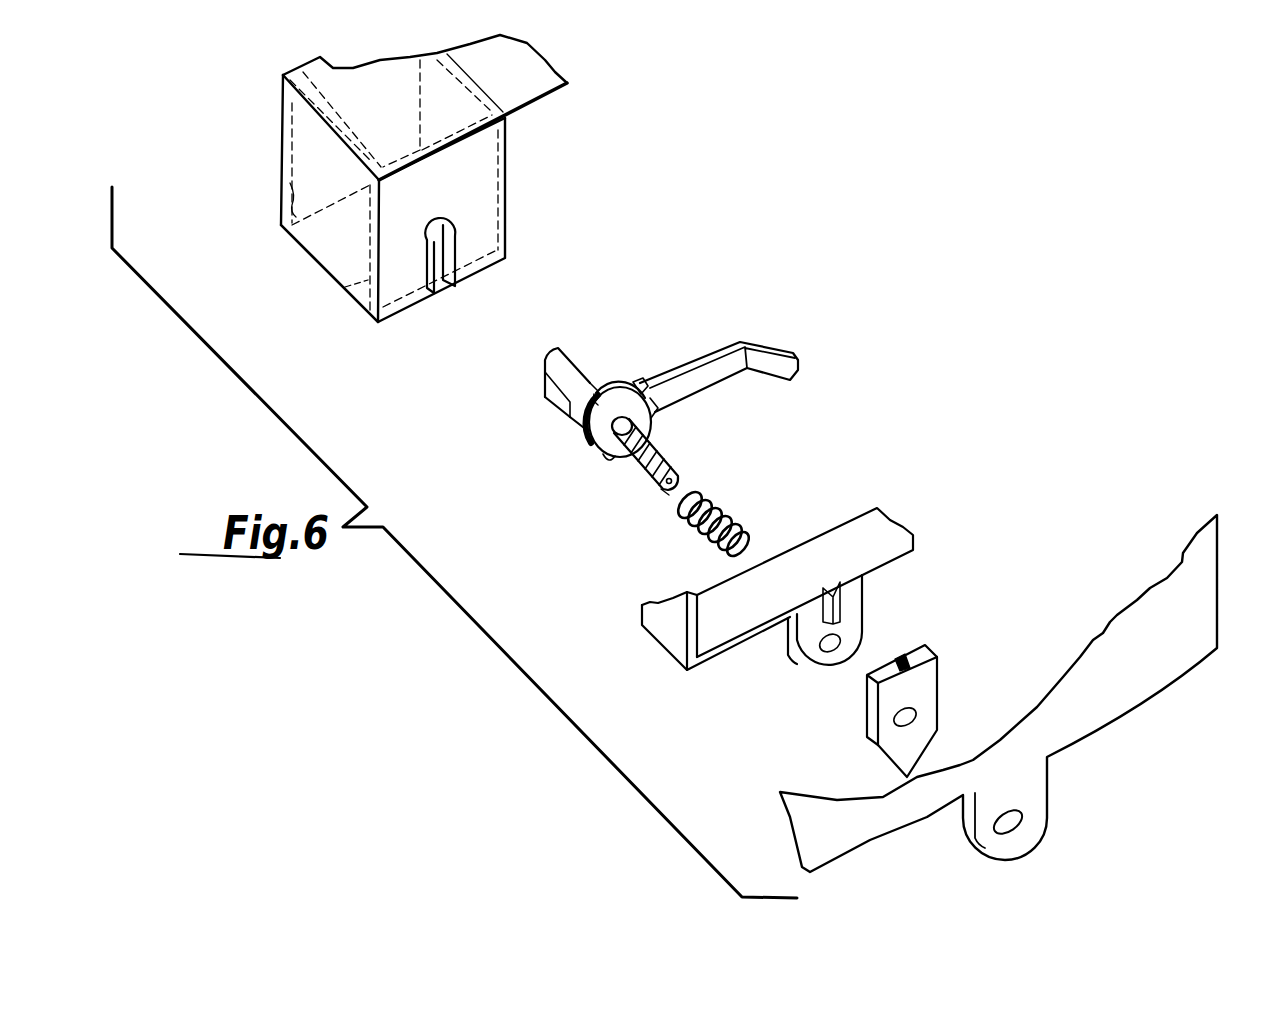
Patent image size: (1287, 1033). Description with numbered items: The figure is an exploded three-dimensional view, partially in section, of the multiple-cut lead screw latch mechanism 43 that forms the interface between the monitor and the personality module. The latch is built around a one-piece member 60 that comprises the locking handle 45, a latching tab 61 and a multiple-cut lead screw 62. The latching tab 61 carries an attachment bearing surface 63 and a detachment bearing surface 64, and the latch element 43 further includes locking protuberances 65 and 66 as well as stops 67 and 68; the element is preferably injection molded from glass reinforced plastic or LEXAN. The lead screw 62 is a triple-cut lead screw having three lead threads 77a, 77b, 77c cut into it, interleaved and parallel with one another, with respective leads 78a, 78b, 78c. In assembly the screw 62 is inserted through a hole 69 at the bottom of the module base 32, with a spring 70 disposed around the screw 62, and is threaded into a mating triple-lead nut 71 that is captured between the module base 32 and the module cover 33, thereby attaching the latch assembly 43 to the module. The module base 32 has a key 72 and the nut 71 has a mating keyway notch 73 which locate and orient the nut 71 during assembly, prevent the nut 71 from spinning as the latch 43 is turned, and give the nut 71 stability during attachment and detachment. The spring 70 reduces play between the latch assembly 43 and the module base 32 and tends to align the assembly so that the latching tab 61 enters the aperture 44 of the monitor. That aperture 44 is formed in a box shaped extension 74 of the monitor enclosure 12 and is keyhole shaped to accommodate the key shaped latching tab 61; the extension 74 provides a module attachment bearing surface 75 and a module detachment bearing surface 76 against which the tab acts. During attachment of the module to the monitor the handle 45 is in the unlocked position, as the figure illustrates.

The monitor enclosure 12 is at (562, 78).
The box shaped extension 74 is at (280, 120).
The module detachment bearing surface 76 is at (280, 232).
The module attachment bearing surface 75 is at (345, 290).
The aperture 44 is at (457, 222).
The one-piece member 60 is at (693, 338).
The detachment bearing surface 64 is at (545, 385).
The latching tab 61 is at (548, 402).
The attachment bearing surface 63 is at (578, 418).
The locking protuberance 66 is at (601, 387).
The stop 68 is at (638, 383).
The locking protuberance 65 is at (606, 460).
The stop 67 is at (657, 408).
The multiple-cut lead screw 62 is at (692, 455).
The lead thread 77a is at (667, 450).
The lead thread 77b is at (670, 457).
The lead thread 77c is at (677, 470).
The latch mechanism 43 is at (594, 510).
The locking handle 45 is at (795, 372).
The spring 70 is at (735, 518).
The lead 78a is at (655, 492).
The lead 78b is at (656, 494).
The lead 78c is at (658, 496).
The module base 32 is at (912, 533).
The hole 69 is at (823, 650).
The key 72 is at (842, 610).
The nut 71 is at (927, 707).
The keyway notch 73 is at (897, 660).
The module cover 33 is at (1212, 597).